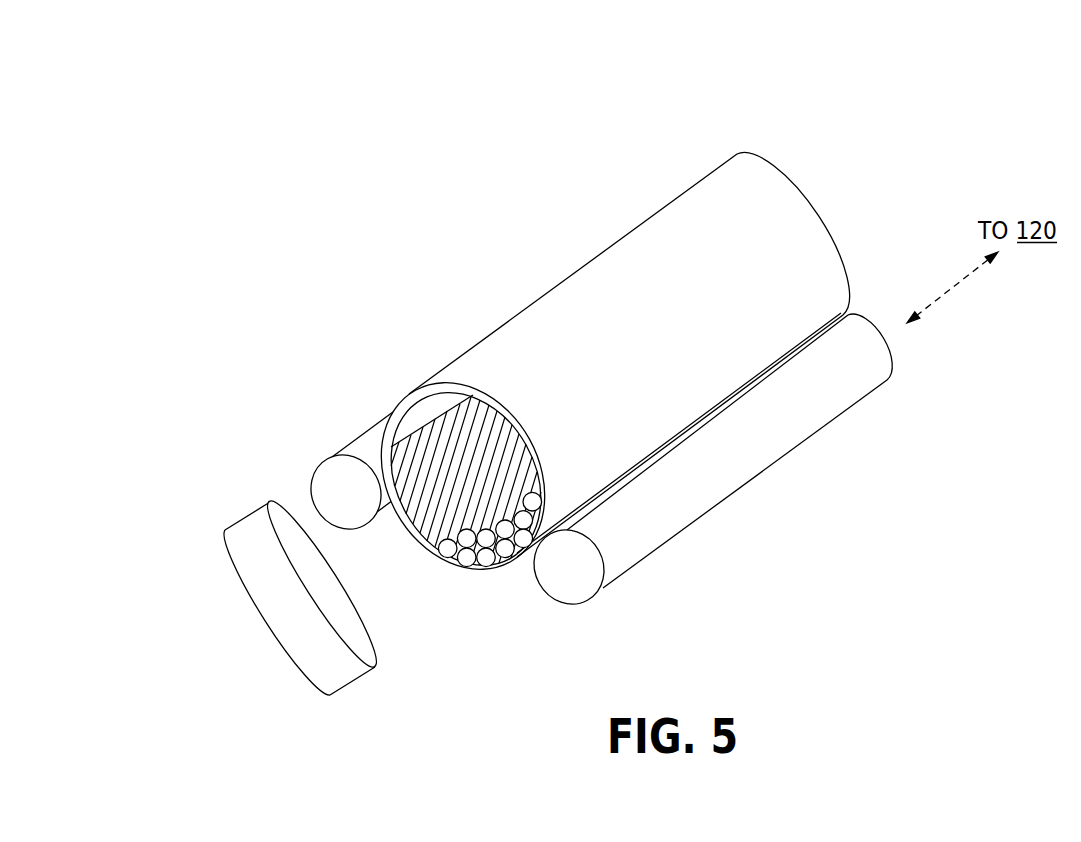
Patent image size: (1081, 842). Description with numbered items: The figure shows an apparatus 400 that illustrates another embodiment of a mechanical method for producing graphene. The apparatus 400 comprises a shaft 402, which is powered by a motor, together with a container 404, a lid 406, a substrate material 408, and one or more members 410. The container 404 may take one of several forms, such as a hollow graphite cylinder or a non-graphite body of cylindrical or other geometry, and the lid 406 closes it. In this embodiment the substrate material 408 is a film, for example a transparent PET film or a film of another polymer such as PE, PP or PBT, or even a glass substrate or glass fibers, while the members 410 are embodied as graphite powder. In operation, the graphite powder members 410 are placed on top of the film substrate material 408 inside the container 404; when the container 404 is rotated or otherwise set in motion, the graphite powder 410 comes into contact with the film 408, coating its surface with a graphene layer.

The apparatus 400 is at (290, 133).
The shaft 402 is at (748, 483).
The container 404 is at (420, 387).
The lid 406 is at (270, 502).
The substrate material 408 is at (517, 440).
The members 410 is at (488, 569).